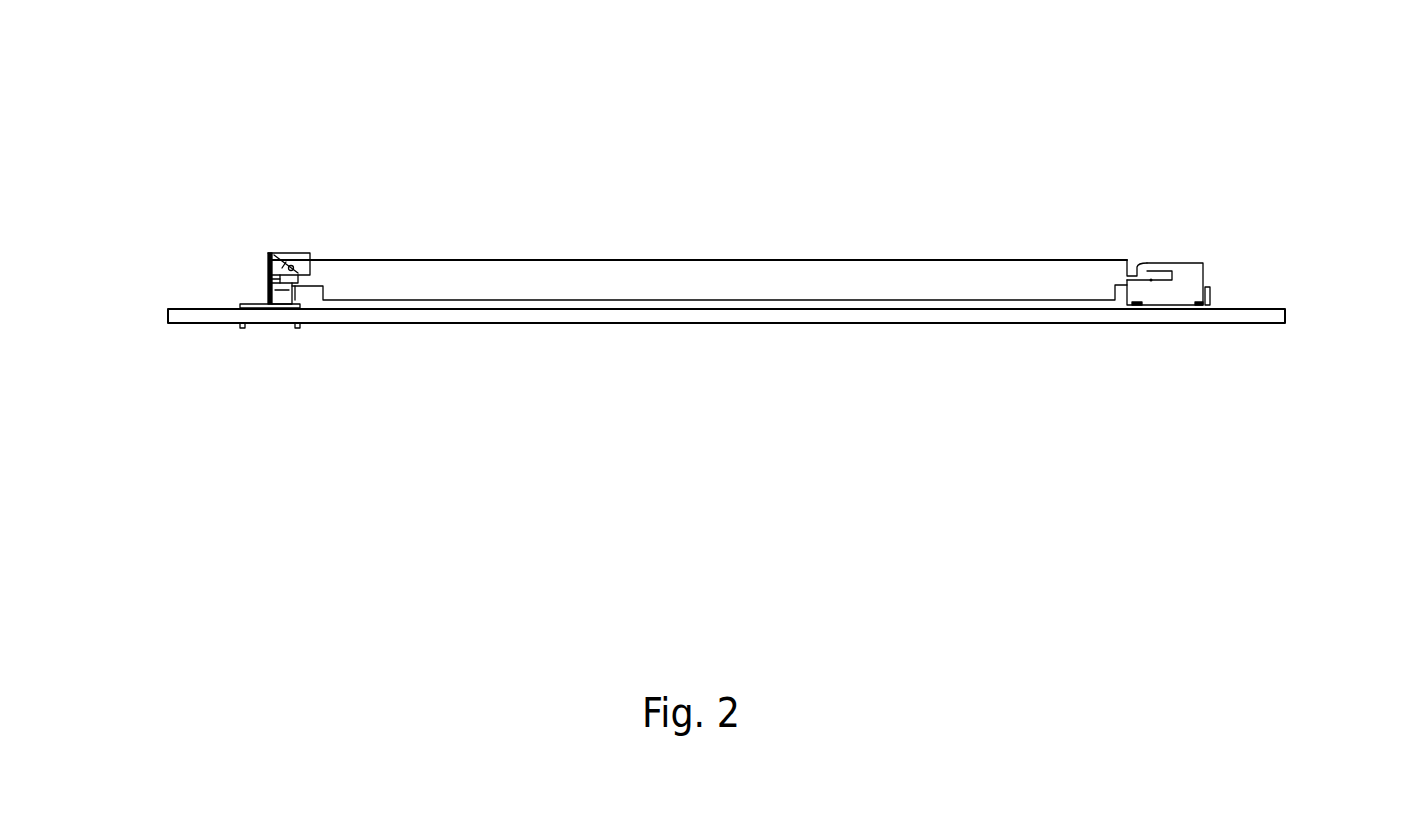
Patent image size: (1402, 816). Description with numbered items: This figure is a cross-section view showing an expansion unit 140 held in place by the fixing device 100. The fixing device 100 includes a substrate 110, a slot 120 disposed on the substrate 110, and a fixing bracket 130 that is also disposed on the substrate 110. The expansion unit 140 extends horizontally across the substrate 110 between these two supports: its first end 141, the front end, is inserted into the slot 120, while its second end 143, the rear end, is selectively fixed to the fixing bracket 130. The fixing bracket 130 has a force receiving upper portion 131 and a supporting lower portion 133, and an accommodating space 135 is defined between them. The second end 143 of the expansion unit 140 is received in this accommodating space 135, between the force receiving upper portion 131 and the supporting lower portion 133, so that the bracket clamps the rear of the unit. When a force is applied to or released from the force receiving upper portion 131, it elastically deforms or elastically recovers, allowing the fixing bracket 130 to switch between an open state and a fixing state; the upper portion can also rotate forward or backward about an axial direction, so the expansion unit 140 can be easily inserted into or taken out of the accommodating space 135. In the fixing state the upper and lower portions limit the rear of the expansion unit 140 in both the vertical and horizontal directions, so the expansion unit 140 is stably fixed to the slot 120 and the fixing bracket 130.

The fixing device 100 is at (142, 105).
The substrate 110 is at (1285, 313).
The slot 120 is at (1188, 262).
The fixing bracket 130 is at (206, 281).
The force receiving upper portion 131 is at (285, 256).
The supporting lower portion 133 is at (283, 298).
The accommodating space 135 is at (248, 285).
The expansion unit 140 is at (709, 216).
The first end 141 is at (1125, 246).
The second end 143 is at (308, 247).